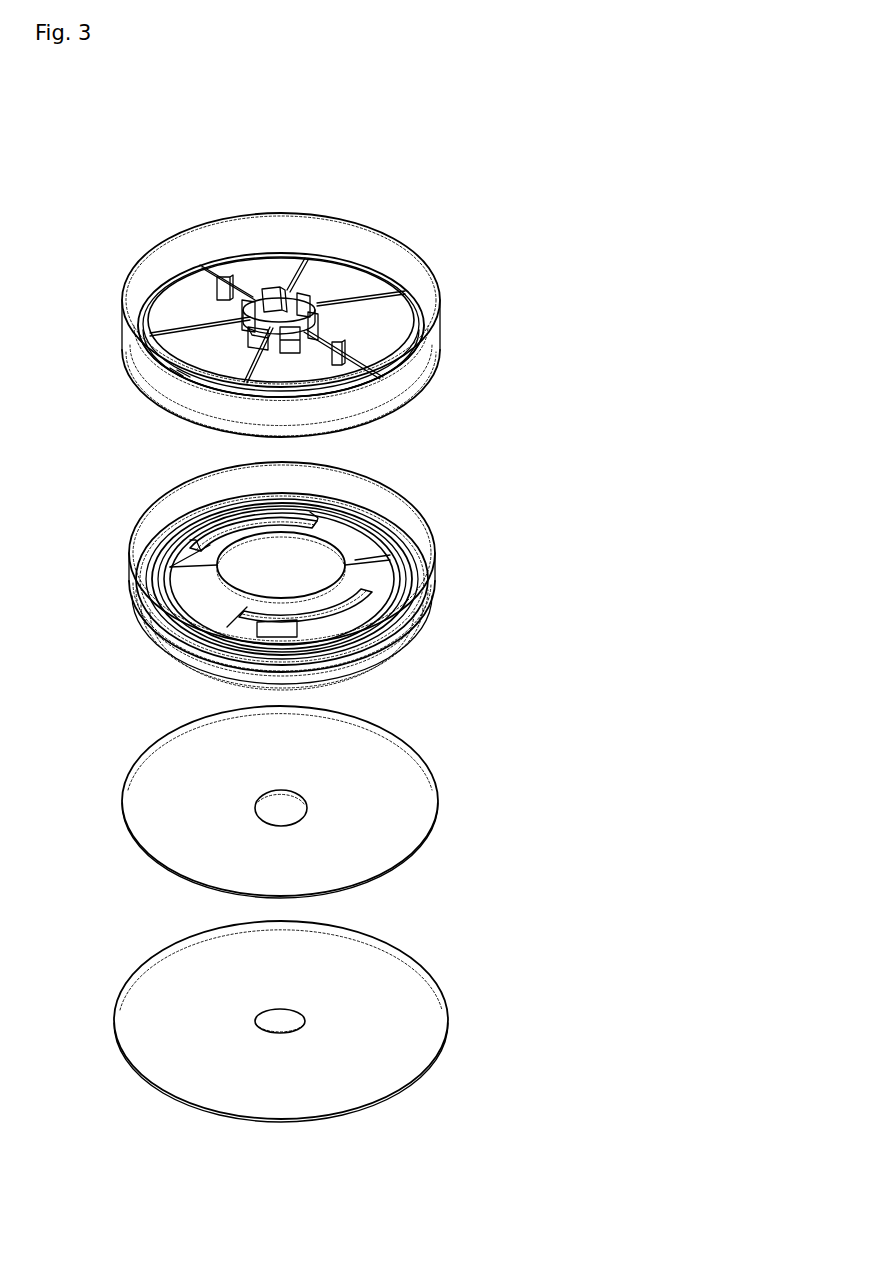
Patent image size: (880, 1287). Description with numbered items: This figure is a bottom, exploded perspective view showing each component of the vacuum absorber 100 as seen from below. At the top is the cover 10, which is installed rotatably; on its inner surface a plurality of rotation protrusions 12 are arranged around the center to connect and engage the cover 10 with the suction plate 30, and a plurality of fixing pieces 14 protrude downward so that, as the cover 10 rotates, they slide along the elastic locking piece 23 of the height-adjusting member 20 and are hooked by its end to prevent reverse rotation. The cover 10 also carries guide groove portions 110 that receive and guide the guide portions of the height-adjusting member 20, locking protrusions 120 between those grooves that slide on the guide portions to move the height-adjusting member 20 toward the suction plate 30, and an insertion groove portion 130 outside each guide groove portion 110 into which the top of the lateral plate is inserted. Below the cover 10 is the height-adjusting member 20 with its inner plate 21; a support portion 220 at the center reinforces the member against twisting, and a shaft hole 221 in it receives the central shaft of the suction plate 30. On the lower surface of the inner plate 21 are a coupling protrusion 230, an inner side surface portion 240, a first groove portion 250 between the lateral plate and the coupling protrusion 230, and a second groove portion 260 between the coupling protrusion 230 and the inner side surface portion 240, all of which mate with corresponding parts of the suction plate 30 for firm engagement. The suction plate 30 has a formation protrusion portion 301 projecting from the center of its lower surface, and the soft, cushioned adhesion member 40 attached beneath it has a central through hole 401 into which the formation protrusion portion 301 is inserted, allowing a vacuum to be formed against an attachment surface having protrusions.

The vacuum absorber 100 is at (482, 199).
The cover 10 is at (446, 291).
The rotation protrusions 12 is at (292, 292).
The fixing pieces 14 is at (222, 285).
The guide groove portions 110 is at (168, 395).
The locking protrusions 120 is at (398, 378).
The insertion groove portion 130 is at (135, 362).
The height-adjusting member 20 is at (435, 512).
The inner plate 21 is at (388, 540).
The elastic locking piece 23 is at (205, 500).
The support portion 220 is at (408, 560).
The shaft hole 221 is at (402, 583).
The coupling protrusion 230 is at (170, 655).
The inner side surface portion 240 is at (160, 636).
The first groove portion 250 is at (130, 586).
The second groove portion 260 is at (128, 608).
The suction plate 30 is at (413, 739).
The formation protrusion portion 301 is at (292, 812).
The adhesion member 40 is at (429, 958).
The through hole 401 is at (300, 1030).